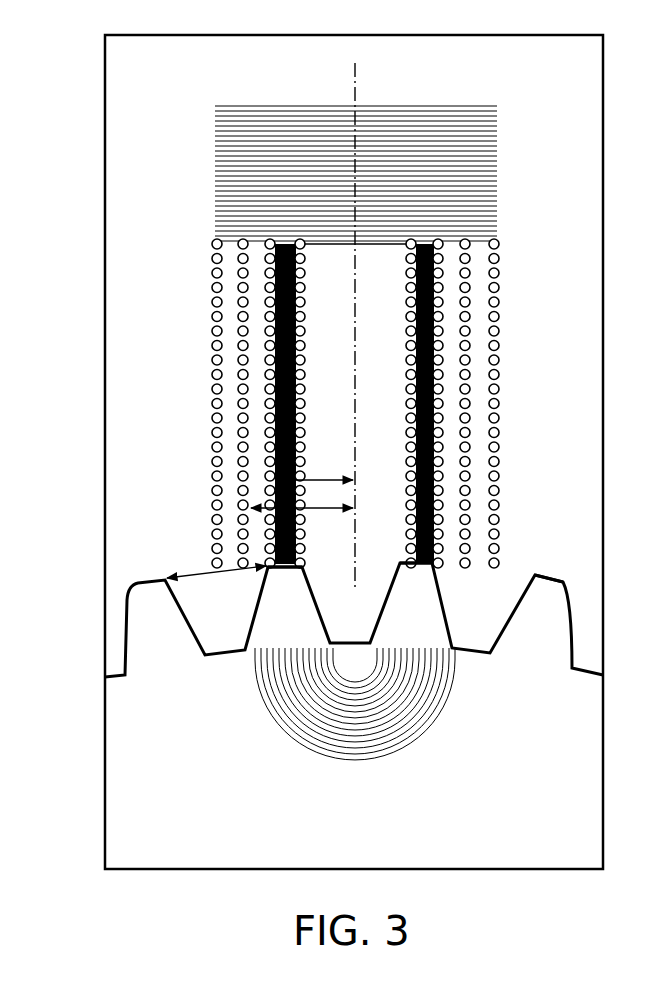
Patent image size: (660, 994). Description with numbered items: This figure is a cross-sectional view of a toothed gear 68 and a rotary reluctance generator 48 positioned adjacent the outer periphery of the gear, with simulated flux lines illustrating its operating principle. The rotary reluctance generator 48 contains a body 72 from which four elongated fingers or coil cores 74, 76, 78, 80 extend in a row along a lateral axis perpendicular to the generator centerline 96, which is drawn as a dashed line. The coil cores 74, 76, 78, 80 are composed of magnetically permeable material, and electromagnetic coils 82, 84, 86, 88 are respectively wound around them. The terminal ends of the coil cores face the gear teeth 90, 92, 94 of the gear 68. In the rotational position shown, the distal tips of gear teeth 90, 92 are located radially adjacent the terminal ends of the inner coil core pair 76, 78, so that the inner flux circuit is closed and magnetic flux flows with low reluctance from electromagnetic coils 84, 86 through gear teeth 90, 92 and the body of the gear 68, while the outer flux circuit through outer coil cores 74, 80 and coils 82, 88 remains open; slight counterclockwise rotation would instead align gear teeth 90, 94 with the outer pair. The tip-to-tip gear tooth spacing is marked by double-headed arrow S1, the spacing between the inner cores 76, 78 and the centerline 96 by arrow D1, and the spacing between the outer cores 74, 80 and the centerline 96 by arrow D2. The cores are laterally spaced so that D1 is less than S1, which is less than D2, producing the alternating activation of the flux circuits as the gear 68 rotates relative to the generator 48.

The rotary reluctance generator 48 is at (218, 108).
The body 72 is at (487, 184).
The centerline 96 is at (355, 80).
The coil core 74 is at (232, 321).
The electromagnetic coil 82 is at (215, 371).
The coil core 76 is at (286, 379).
The electromagnetic coil 84 is at (302, 318).
The electromagnetic coil 86 is at (408, 357).
The coil core 78 is at (420, 420).
The coil core 80 is at (477, 322).
The electromagnetic coil 88 is at (494, 258).
The toothed gear 68 is at (124, 616).
The gear tooth 90 is at (300, 627).
The gear tooth 92 is at (433, 626).
The gear tooth 94 is at (557, 645).
The tip-to-tip gear tooth spacing S1 is at (203, 572).
The inner core spacing D1 is at (317, 480).
The outer core spacing D2 is at (318, 508).